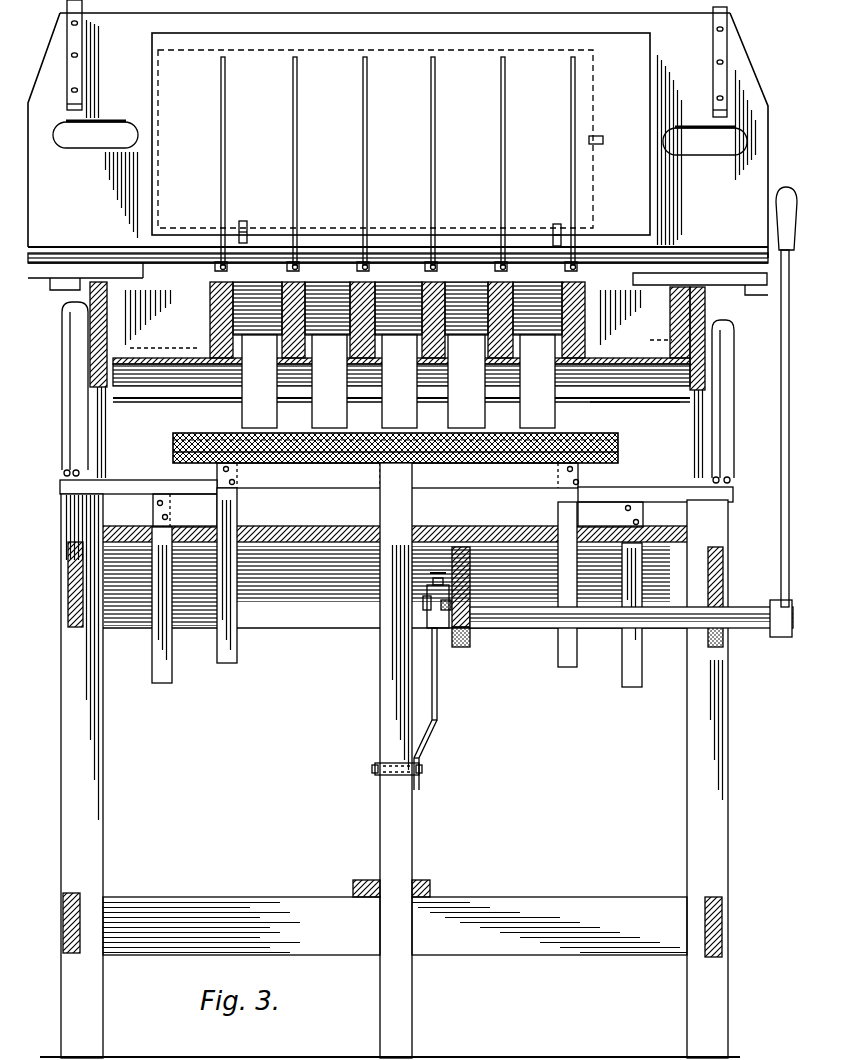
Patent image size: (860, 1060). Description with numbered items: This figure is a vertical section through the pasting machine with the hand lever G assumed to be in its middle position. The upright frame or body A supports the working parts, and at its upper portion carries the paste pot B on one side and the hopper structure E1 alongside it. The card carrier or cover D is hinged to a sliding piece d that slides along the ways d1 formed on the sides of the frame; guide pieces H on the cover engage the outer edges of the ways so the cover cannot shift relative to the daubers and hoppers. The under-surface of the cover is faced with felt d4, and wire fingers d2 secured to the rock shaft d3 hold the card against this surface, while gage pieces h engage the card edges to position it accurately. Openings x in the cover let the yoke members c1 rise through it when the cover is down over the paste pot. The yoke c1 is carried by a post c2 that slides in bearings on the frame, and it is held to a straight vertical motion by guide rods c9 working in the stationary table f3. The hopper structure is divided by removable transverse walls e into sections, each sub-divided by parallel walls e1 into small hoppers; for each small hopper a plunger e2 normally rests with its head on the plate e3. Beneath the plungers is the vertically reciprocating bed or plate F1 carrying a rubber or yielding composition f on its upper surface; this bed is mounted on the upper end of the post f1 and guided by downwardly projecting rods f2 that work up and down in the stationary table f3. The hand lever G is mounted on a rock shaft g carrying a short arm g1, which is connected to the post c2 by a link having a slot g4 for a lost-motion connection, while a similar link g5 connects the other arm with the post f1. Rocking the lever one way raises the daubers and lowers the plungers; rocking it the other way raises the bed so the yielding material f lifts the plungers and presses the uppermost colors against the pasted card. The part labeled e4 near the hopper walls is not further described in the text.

The upright frame or body A is at (62, 683).
The paste pot B is at (614, 400).
The card carrier or cover D is at (398, 135).
The hopper structure E1 is at (408, 320).
The vertically reciprocating bed or plate F1 is at (620, 460).
The hand lever G is at (781, 386).
The guide pieces H is at (70, 38).
The vertically reciprocating yoke c1 is at (742, 360).
The post or member c2 is at (620, 524).
The guide rods or bars c9 is at (170, 675).
The sliding piece d is at (458, 272).
The ways d1 is at (716, 245).
The wire fingers d2 is at (221, 152).
The rock shaft or rod d3 is at (398, 220).
The felt facing d4 is at (401, 134).
The removable transverse walls e is at (296, 282).
The parallel walls e1 is at (397, 308).
The plunger e2 is at (563, 390).
The plate e3 is at (210, 363).
The guide e4 is at (401, 336).
The rubber or yielding composition f is at (616, 442).
The vertically reciprocating post or member f1 is at (380, 652).
The guide rods or bars f2 is at (560, 660).
The stationary table f3 is at (302, 532).
The rock shaft g is at (592, 612).
The short arm g1 is at (450, 605).
The slot g4 is at (437, 666).
The link g5 is at (430, 716).
The gage pieces h is at (243, 222).
The openings x is at (105, 135).